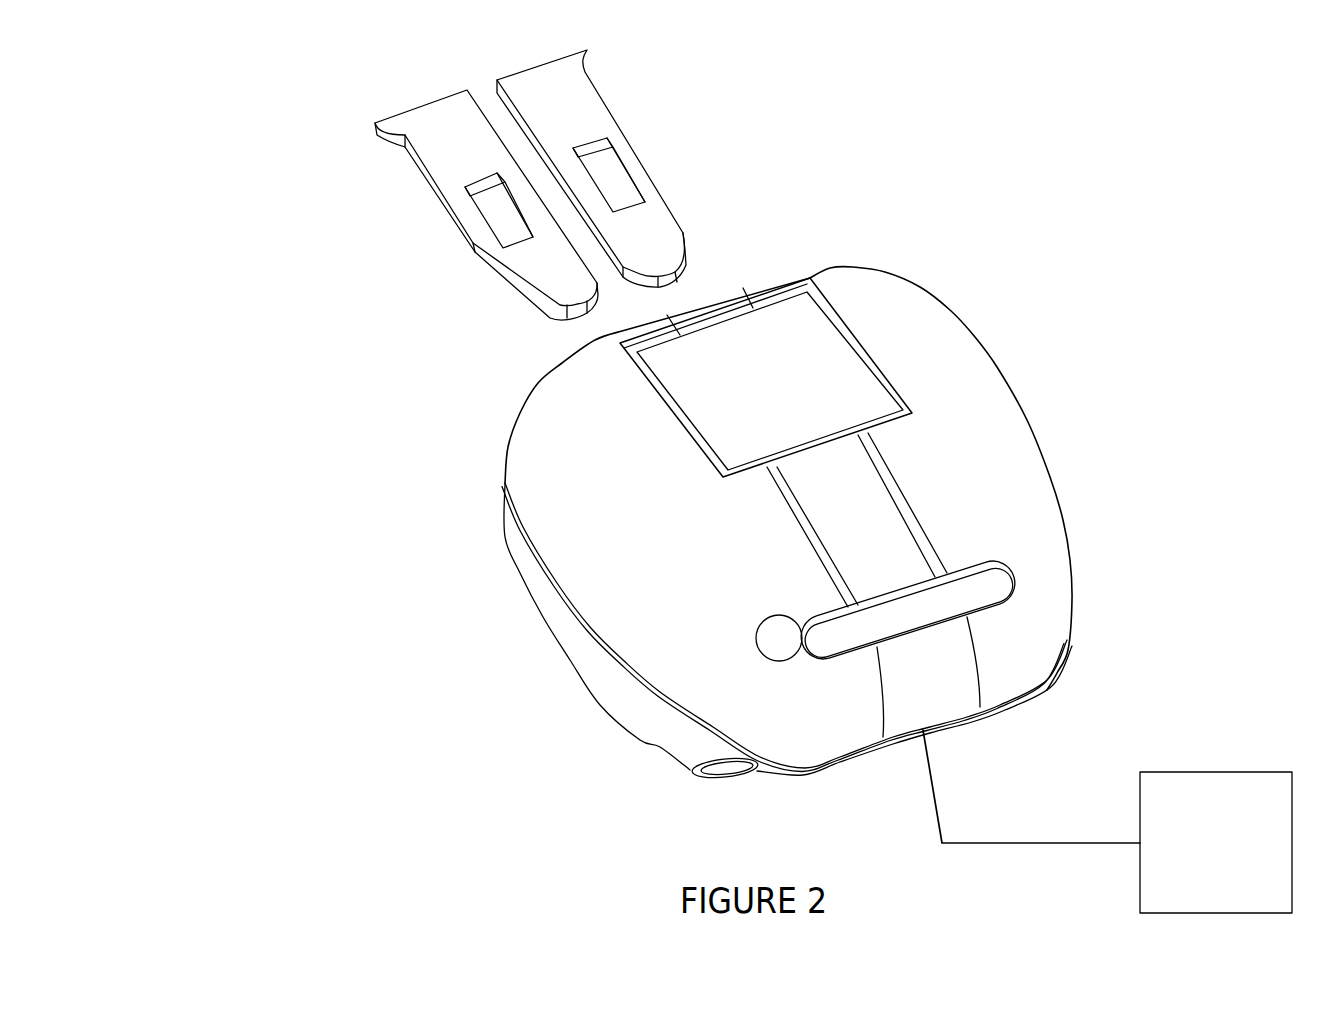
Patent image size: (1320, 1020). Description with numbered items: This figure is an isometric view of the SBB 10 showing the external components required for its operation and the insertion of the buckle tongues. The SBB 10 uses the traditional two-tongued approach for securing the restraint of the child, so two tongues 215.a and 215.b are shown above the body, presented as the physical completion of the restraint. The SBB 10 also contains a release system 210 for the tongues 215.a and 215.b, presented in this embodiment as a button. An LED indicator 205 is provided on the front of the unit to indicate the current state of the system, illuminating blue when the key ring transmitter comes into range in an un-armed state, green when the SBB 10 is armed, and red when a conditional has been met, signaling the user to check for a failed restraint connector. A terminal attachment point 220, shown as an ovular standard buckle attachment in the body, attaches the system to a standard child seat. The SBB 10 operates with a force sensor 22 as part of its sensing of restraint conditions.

The SBB 10 is at (953, 173).
The force sensor 22 is at (1235, 772).
The LED indicator 205 is at (756, 640).
The release system 210 is at (840, 357).
The tongue 215.a is at (655, 149).
The tongue 215.b is at (438, 218).
The terminal attachment point 220 is at (1000, 583).